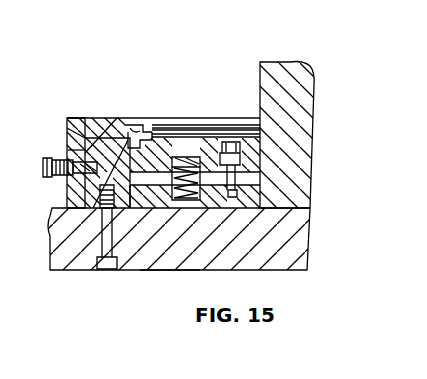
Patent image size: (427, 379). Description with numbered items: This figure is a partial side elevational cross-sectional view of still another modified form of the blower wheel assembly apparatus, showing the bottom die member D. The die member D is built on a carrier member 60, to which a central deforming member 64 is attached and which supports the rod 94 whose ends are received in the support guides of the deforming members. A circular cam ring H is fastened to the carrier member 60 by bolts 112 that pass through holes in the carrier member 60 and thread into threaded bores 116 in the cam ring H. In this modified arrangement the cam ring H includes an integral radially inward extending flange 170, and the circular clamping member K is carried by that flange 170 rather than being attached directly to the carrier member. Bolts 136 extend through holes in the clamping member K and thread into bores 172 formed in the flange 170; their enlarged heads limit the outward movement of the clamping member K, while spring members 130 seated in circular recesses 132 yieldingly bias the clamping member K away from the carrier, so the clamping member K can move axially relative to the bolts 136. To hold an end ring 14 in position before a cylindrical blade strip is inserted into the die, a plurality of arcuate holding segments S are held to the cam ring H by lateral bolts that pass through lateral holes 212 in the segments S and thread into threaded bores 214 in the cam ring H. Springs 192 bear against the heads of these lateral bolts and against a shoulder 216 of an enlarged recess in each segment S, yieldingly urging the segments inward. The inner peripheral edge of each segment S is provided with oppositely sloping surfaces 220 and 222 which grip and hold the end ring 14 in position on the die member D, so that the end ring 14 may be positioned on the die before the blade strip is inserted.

The carrier member 60 is at (286, 270).
The central deforming member 64 is at (303, 72).
The end ring 14 is at (211, 124).
The rod 94 is at (42, 164).
The bolt 112 is at (106, 269).
The threaded bore 116 is at (102, 212).
The spring member 130 is at (178, 198).
The circular recess 132 is at (200, 157).
The bolt 136 is at (241, 162).
The radially inward extending flange 170 is at (214, 200).
The threaded bore 172 is at (231, 198).
The spring 192 is at (58, 174).
The lateral hole 212 is at (75, 151).
The threaded bore 214 is at (80, 125).
The shoulder 216 is at (72, 174).
The sloping surface 220 is at (141, 138).
The sloping surface 222 is at (131, 126).
The arcuate holding segment S is at (86, 116).
The circular clamping member K is at (251, 131).
The circular cam ring H is at (130, 196).
The second bottom die member D is at (169, 276).